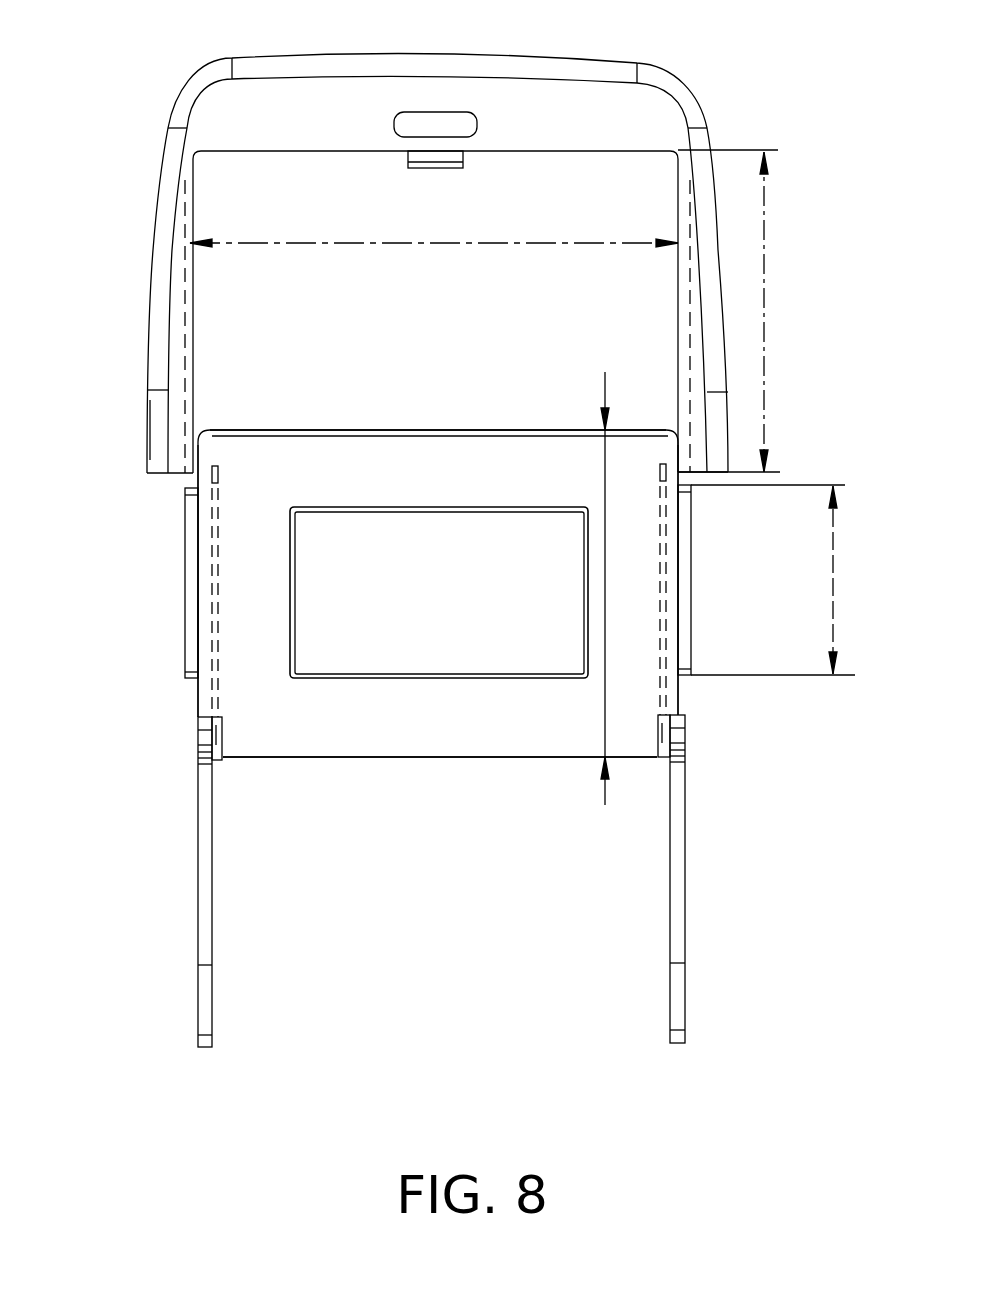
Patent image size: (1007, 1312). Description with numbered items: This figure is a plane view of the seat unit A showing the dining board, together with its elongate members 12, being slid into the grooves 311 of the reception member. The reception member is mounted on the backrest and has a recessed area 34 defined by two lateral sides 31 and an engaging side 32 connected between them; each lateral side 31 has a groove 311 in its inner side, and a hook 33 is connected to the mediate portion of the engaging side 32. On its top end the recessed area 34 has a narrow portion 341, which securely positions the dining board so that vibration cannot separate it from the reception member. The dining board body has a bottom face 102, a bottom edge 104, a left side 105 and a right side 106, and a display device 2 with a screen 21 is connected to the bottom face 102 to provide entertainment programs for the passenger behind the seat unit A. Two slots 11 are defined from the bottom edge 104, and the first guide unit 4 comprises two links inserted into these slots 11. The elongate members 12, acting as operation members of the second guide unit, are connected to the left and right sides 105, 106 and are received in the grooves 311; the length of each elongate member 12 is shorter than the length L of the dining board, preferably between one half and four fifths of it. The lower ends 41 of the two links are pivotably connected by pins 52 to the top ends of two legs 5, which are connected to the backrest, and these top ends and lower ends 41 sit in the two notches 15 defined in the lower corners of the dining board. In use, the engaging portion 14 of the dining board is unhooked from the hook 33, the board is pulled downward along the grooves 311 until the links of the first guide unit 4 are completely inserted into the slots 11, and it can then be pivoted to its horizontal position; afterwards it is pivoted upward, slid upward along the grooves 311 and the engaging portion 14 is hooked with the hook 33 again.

The seat unit A is at (403, 236).
The engaging side 32 is at (482, 53).
The lateral side 31 is at (153, 250).
The groove 311 is at (183, 343).
The hook 33 is at (437, 157).
The narrow portion 341 is at (412, 243).
The recessed area 34 is at (772, 300).
The bottom edge 104 is at (287, 430).
The engaging portion 14 is at (432, 432).
The length of the dining board L is at (605, 540).
The left side 105 is at (197, 518).
The bottom face 102 is at (208, 625).
The slot 11 is at (360, 590).
The first guide unit 4 is at (212, 568).
The elongate member 12 is at (187, 667).
The notch 15 is at (348, 815).
The pin 52 is at (212, 740).
The leg 5 is at (435, 881).
The lower end 41 is at (213, 760).
The screen 21 is at (385, 680).
The display device 2 is at (439, 683).
The right side 106 is at (680, 698).